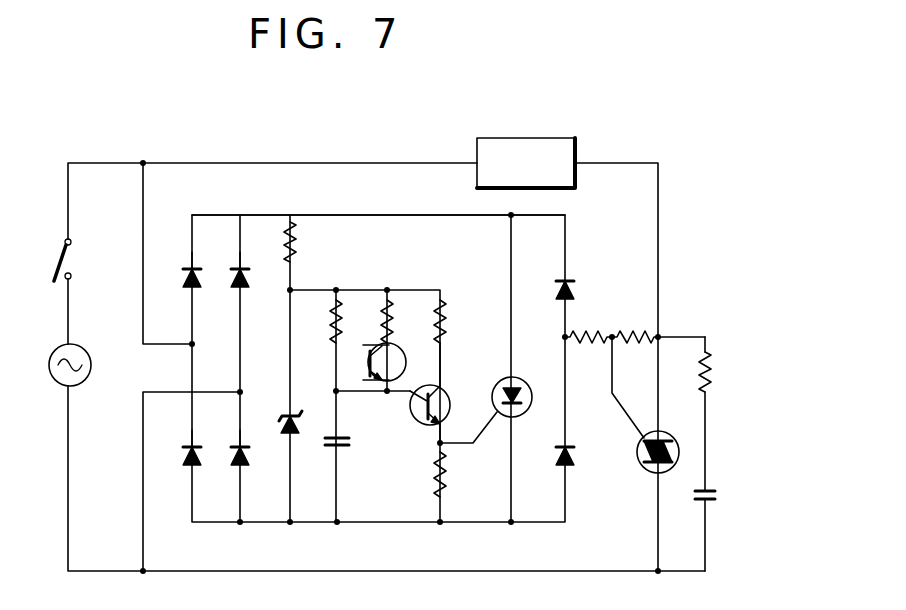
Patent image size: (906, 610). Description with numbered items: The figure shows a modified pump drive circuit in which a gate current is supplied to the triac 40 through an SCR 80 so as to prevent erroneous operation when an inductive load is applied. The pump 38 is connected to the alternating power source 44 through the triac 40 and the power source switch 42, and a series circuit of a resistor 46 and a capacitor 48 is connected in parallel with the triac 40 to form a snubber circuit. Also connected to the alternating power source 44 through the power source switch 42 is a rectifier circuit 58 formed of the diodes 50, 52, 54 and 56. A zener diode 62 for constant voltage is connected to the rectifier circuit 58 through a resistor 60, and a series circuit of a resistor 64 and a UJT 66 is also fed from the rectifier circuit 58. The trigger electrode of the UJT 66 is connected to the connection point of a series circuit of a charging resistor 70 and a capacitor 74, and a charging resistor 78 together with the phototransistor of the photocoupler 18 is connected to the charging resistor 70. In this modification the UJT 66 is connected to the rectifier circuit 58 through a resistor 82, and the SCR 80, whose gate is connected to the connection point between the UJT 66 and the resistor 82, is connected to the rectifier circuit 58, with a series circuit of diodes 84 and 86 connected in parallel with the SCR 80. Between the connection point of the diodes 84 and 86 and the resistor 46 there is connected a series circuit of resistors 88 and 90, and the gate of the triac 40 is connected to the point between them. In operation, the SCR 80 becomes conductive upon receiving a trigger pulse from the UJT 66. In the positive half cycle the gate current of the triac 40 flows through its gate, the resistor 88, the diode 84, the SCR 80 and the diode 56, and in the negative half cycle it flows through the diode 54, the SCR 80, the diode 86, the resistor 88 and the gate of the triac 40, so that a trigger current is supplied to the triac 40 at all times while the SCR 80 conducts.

The photocoupler 18 is at (402, 368).
The pump 38 is at (519, 138).
The triac 40 is at (636, 452).
The power source switch 42 is at (76, 264).
The alternating power source 44 is at (92, 364).
The resistor 46 is at (716, 374).
The capacitor 48 is at (718, 498).
The diode 50 is at (205, 278).
The diode 52 is at (205, 457).
The diode 54 is at (253, 278).
The diode 56 is at (253, 457).
The rectifier circuit 58 is at (211, 224).
The resistor 60 is at (296, 242).
The zener diode 62 is at (276, 428).
The resistor 64 is at (450, 332).
The UJT 66 is at (449, 395).
The charging resistor 70 is at (348, 311).
The capacitor 74 is at (352, 442).
The charging resistor 78 is at (401, 311).
The SCR 80 is at (529, 389).
The resistor 82 is at (454, 473).
The diode 84 is at (553, 285).
The diode 86 is at (580, 451).
The resistor 88 is at (586, 331).
The resistor 90 is at (630, 328).